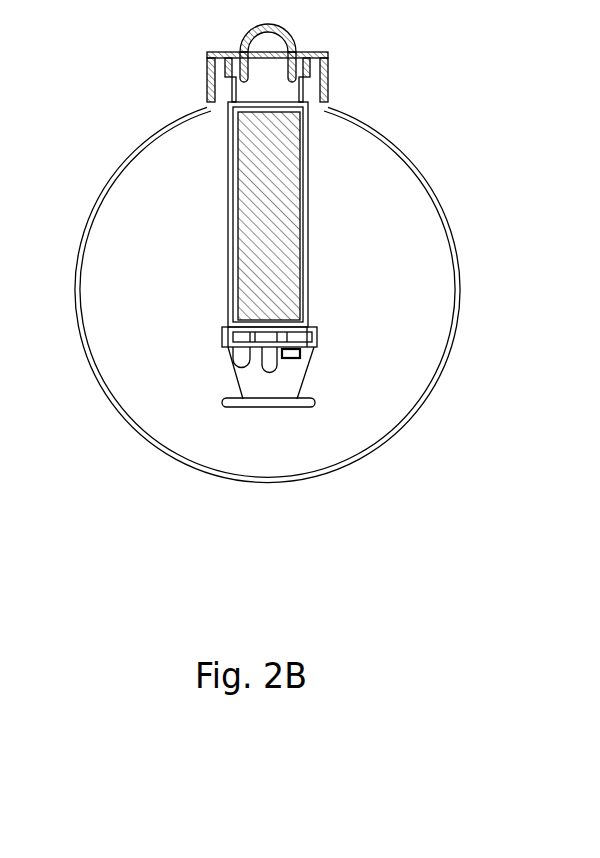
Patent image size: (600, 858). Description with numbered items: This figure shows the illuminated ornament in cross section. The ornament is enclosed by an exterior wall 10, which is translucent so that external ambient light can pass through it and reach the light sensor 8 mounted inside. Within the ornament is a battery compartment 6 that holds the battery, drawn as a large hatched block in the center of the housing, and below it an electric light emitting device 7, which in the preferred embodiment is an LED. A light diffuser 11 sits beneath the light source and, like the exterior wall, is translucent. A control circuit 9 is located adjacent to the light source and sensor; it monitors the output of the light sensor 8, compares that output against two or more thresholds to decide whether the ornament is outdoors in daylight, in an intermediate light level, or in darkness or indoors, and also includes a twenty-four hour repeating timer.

The battery compartment 6 is at (258, 208).
The electric light emitting device 7 is at (268, 362).
The light sensor 8 is at (240, 354).
The control circuit 9 is at (294, 355).
The exterior wall 10 is at (85, 235).
The light diffuser 11 is at (279, 404).